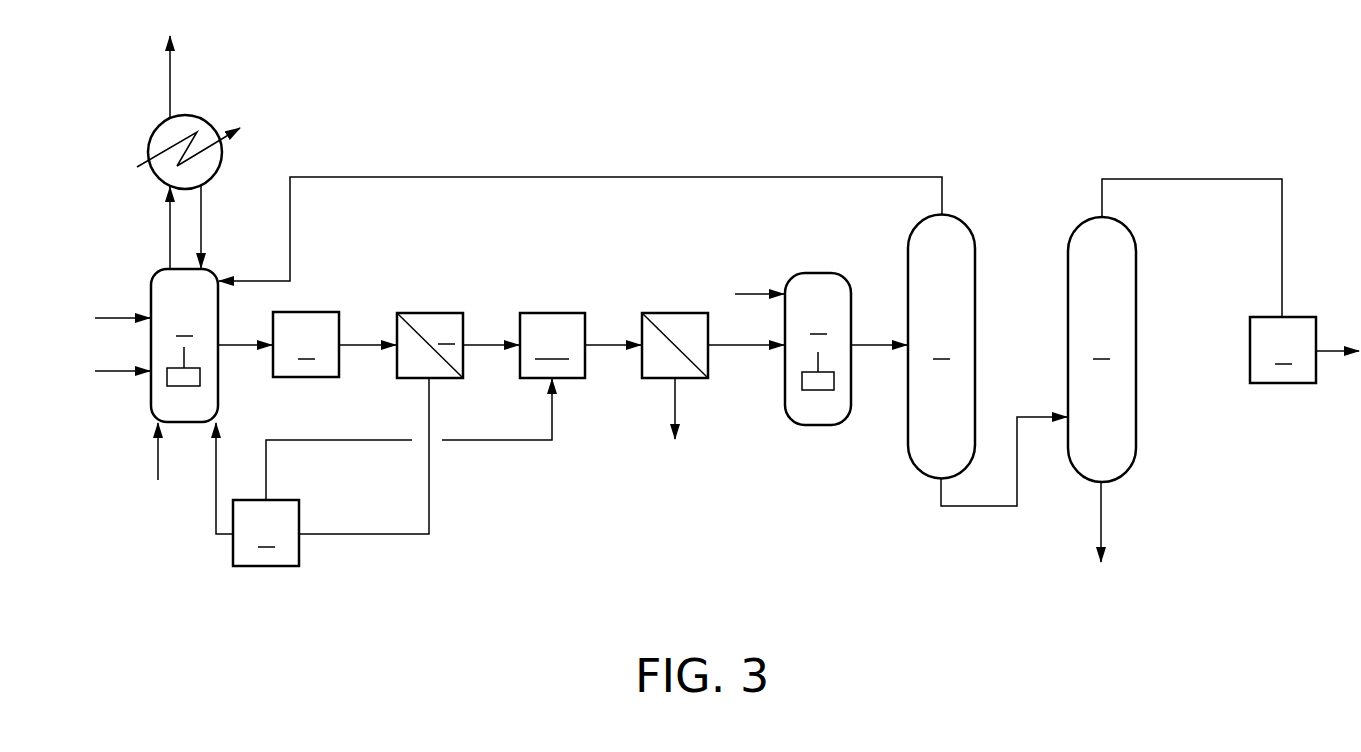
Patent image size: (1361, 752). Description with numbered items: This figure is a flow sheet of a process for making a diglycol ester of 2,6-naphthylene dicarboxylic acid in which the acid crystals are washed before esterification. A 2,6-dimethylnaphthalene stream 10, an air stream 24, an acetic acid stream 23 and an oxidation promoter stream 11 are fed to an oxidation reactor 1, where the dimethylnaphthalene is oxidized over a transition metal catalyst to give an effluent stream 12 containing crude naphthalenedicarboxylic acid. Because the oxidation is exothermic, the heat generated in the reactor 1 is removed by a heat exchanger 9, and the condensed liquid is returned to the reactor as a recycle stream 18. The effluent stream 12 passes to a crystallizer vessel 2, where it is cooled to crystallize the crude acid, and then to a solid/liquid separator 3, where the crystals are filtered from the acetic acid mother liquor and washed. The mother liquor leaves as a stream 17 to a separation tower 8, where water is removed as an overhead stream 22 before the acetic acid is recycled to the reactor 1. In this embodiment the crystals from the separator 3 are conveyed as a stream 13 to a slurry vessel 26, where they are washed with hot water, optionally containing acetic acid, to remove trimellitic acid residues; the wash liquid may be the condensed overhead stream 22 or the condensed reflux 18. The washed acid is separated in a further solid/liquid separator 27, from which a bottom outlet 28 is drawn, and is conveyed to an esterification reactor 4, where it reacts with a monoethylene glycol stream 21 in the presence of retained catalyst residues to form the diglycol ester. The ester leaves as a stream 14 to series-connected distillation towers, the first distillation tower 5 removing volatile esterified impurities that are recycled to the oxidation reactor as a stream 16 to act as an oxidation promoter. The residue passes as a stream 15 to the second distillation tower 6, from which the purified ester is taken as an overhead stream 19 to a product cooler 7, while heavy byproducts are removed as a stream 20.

The oxidation reactor 1 is at (184, 345).
The crystallizer vessel 2 is at (334, 344).
The solid/liquid separator 3 is at (430, 345).
The esterification reactor 4 is at (818, 349).
The first distillation tower 5 is at (941, 347).
The second distillation tower 6 is at (1102, 349).
The product cooler 7 is at (1304, 350).
The separation tower 8 is at (266, 533).
The heat exchanger 9 is at (150, 140).
The 2,6-dimethylnaphthalene stream 10 is at (115, 312).
The oxidation promoter stream 11 is at (115, 374).
The effluent stream 12 is at (230, 348).
The separated acid crystals stream 13 is at (473, 344).
The ester stream 14 is at (865, 344).
The residue stream 15 is at (983, 507).
The recycle stream of volatile impurities 16 is at (763, 176).
The mother liquor stream 17 is at (386, 536).
The condensed liquid recycle stream 18 is at (203, 215).
The overhead stream 19 is at (1203, 178).
The heavy byproducts stream 20 is at (1101, 522).
The monoethylene glycol stream 21 is at (740, 293).
The water stream 22 is at (267, 485).
The acetic acid stream 23 is at (215, 526).
The air stream 24 is at (157, 468).
The slurry vessel 26 is at (580, 345).
The further solid/liquid separator 27 is at (652, 312).
The outlet line 28 is at (676, 403).